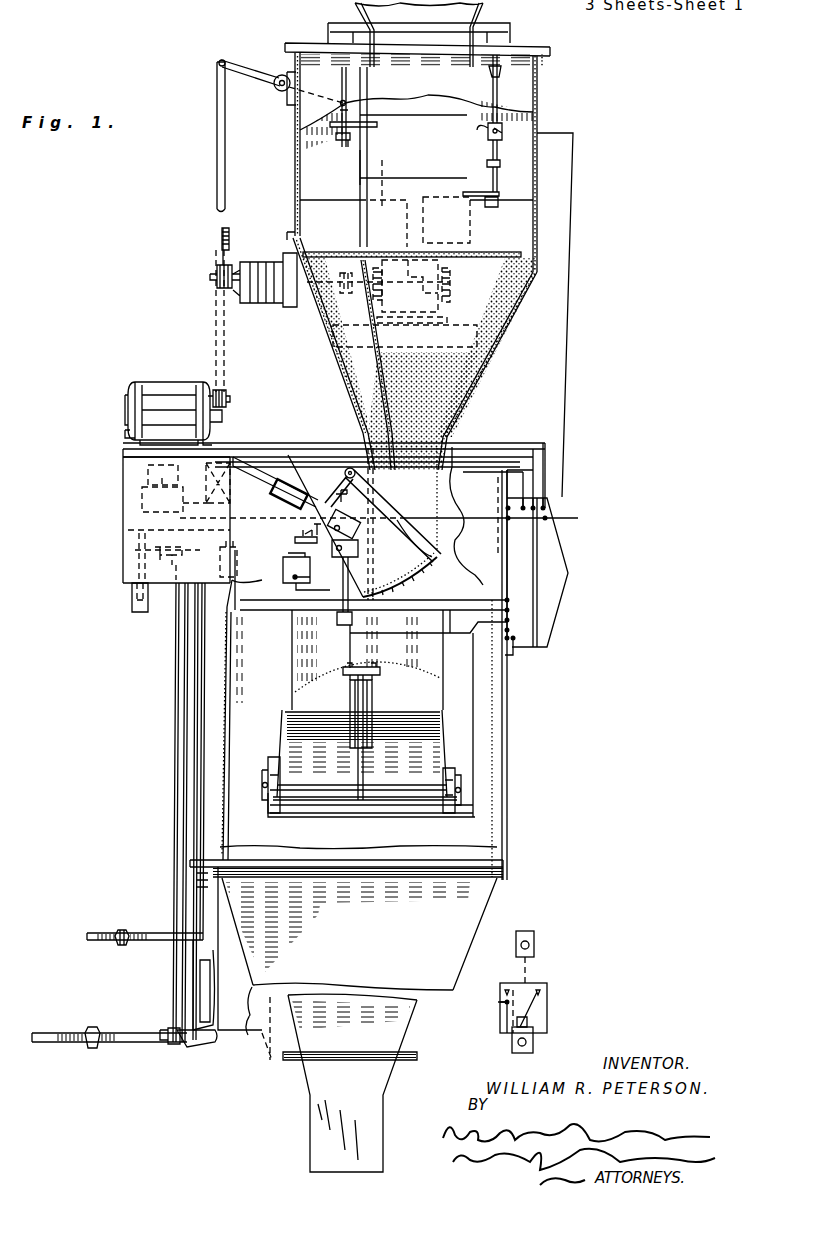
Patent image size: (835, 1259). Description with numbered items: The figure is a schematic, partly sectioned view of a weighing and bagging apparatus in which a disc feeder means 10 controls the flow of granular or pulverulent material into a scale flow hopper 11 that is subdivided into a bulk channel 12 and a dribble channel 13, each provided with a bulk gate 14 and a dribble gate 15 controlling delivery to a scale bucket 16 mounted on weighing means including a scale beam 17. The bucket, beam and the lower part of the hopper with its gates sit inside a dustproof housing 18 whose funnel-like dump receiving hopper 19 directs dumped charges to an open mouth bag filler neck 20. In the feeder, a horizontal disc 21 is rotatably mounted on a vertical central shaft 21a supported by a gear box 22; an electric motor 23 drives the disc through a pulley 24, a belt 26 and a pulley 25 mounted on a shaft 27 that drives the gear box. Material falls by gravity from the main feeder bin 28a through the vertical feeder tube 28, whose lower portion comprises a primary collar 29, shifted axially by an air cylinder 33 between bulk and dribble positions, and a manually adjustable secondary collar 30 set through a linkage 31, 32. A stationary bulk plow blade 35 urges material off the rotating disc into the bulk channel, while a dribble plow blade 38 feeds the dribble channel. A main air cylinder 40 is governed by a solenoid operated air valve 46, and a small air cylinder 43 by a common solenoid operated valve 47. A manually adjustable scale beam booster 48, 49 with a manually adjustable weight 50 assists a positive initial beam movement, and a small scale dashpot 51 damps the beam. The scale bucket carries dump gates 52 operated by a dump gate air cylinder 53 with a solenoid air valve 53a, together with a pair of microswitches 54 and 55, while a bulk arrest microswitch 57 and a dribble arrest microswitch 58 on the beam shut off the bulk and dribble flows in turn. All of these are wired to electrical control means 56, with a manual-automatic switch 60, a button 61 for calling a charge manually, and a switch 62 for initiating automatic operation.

The disc feeder means 10 is at (291, 203).
The scale flow hopper 11 is at (500, 361).
The bulk channel 12 is at (448, 392).
The dribble channel 13 is at (340, 372).
The bulk gate 14 is at (438, 555).
The dribble gate 15 is at (400, 592).
The scale bucket 16 is at (284, 655).
The scale beam 17 is at (299, 532).
The dustproof housing 18 is at (219, 681).
The dump receiving hopper 19 is at (427, 997).
The open mouth bag filler neck 20 is at (330, 1117).
The disc 21 is at (347, 256).
The vertical central shaft 21a is at (440, 308).
The gear box 22 is at (452, 286).
The electric motor 23 is at (176, 392).
The pulley 24 is at (222, 401).
The pulley 25 is at (221, 236).
The belt 26 is at (218, 332).
The shaft 27 is at (220, 278).
The vertical feeder tube 28 is at (352, 170).
The main feeder bin 28a is at (470, 18).
The primary collar 29 is at (355, 211).
The secondary collar 30 is at (362, 152).
The linkage 31 is at (226, 124).
The linkage 32 is at (238, 68).
The air cylinder 33 is at (500, 132).
The bulk plow blade 35 is at (470, 230).
The dribble plow blade 38 is at (338, 208).
The main air cylinder 40 is at (277, 505).
The small air cylinder 43 is at (312, 528).
The solenoid operated air valve 46 is at (218, 490).
The solenoid operated valve 47 is at (142, 497).
The scale beam booster 48 is at (134, 933).
The scale beam booster 49 is at (172, 565).
The manually adjustable weight 50 is at (119, 945).
The scale dashpot 51 is at (131, 603).
The dump gates 52 is at (330, 793).
The dump gate air cylinder 53 is at (373, 698).
The solenoid air valve 53a is at (370, 668).
The microswitch 54 is at (267, 775).
The microswitch 55 is at (460, 793).
The electrical control means 56 is at (556, 554).
The bulk arrest microswitch 57 is at (310, 577).
The dribble arrest microswitch 58 is at (220, 575).
The manual-automatic switch 60 is at (540, 993).
The button 61 is at (534, 945).
The switch 62 is at (530, 1043).